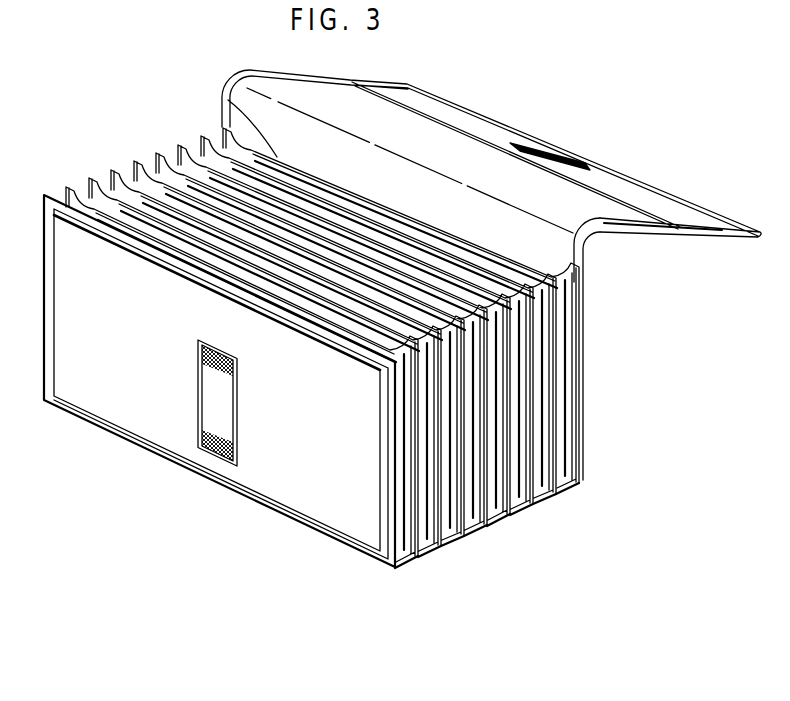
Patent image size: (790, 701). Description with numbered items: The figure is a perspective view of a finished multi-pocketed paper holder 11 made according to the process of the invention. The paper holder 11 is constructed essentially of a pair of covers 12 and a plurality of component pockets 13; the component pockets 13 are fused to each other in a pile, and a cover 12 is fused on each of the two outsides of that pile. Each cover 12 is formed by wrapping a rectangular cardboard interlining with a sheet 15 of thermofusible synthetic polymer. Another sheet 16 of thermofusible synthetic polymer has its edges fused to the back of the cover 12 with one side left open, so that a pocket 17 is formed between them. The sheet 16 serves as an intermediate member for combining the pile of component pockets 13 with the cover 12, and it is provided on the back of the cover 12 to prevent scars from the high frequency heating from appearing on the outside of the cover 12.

The paper holder 11 is at (133, 157).
The cover 12 is at (589, 380).
The component pocket 13 is at (555, 493).
The sheet of thermofusible synthetic polymer 15 is at (118, 406).
The sheet of thermofusible synthetic polymer 16 is at (468, 271).
The pocket 17 is at (541, 262).